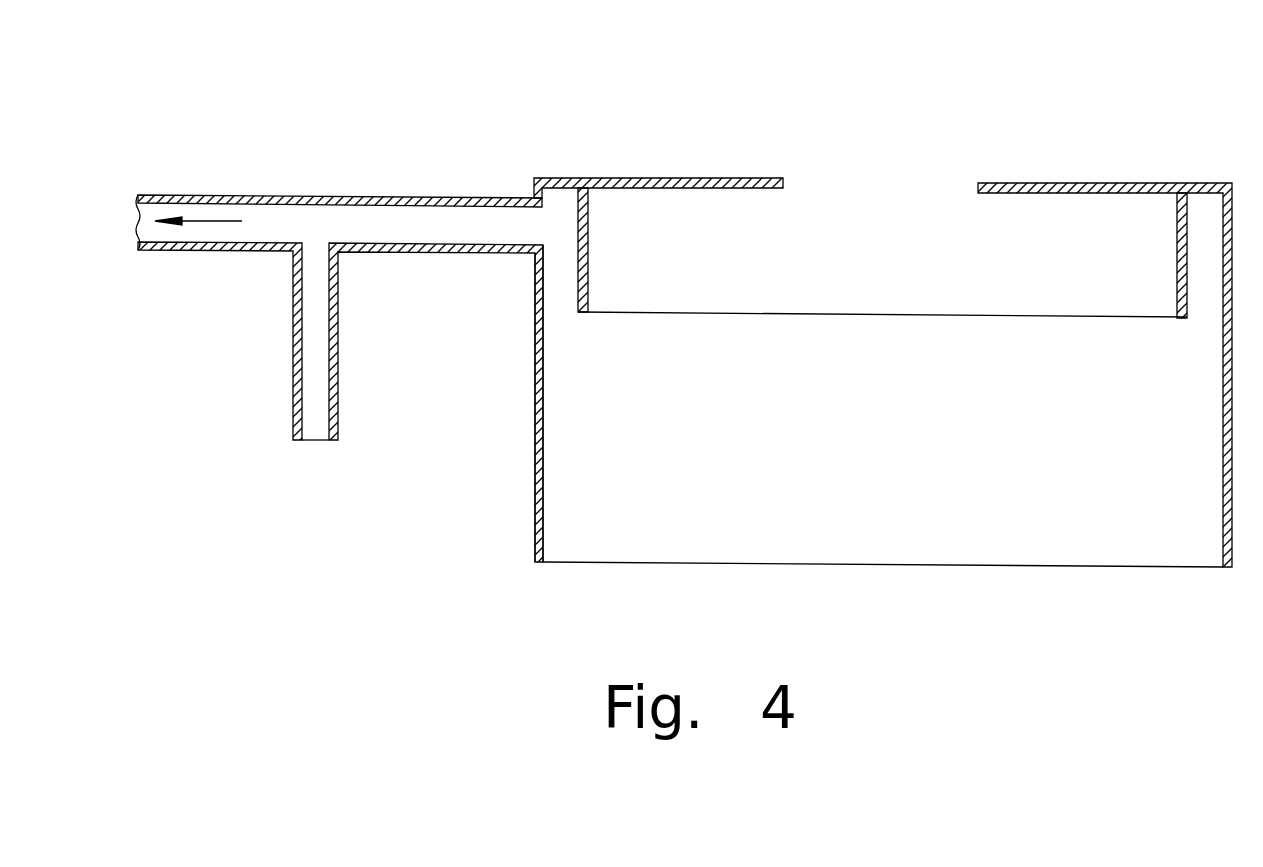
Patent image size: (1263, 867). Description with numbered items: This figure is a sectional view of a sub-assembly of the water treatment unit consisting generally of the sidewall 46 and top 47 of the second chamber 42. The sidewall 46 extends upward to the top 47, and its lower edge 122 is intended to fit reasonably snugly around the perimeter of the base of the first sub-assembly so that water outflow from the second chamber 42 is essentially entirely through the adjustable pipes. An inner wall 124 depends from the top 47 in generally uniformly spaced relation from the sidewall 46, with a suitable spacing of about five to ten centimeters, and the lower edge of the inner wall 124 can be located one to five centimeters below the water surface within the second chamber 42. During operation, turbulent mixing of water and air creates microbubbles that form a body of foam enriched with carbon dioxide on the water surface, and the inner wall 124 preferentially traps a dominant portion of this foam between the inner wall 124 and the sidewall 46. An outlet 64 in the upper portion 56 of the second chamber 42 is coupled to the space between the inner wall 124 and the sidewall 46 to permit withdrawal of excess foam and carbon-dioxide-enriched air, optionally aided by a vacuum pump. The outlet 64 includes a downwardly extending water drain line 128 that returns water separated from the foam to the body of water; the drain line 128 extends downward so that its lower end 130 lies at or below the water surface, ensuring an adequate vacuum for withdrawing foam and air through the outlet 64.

The second chamber 42 is at (1147, 121).
The sidewall 46 is at (535, 400).
The top 47 is at (728, 178).
The upper portion 56 is at (975, 445).
The outlet 64 is at (467, 222).
The lower edge 122 is at (590, 563).
The inner wall 124 is at (688, 305).
The water drain line 128 is at (303, 338).
The lower end 130 is at (318, 442).